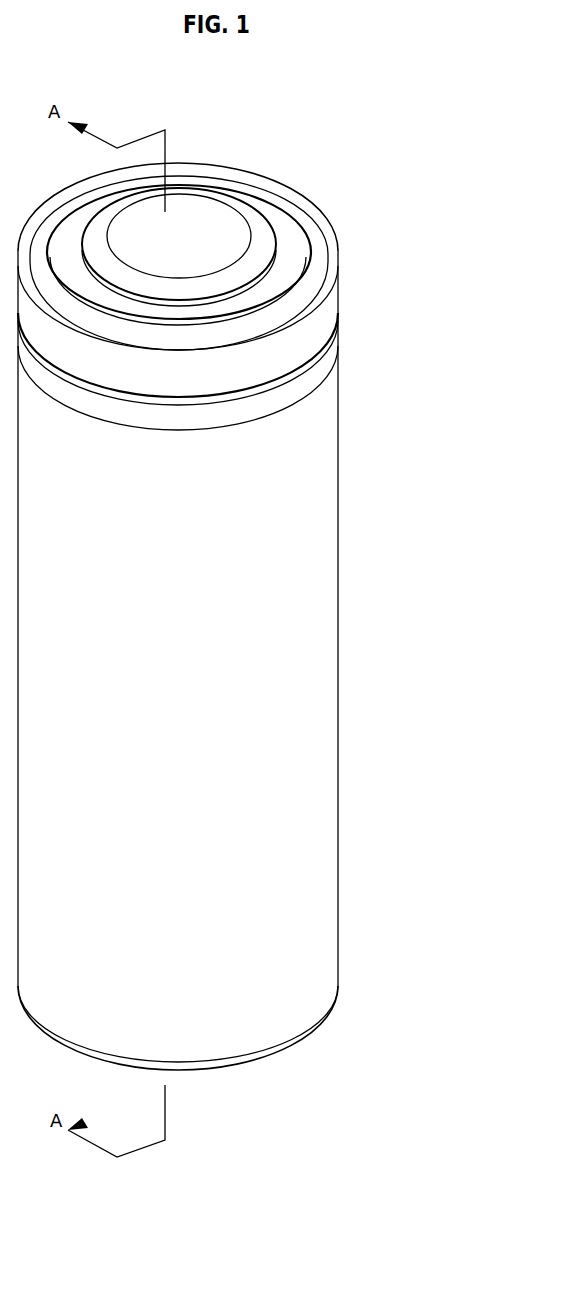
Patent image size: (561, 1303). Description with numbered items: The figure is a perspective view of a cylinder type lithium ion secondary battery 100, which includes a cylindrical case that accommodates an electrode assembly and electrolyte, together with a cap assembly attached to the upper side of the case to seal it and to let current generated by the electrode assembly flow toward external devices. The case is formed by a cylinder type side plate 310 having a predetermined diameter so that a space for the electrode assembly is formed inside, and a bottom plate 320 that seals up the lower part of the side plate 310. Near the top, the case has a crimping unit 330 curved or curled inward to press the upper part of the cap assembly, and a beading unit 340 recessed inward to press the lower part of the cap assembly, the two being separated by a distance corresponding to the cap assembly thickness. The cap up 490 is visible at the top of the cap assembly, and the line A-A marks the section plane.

The cylinder type lithium ion secondary battery 100 is at (402, 282).
The cylinder type side plate 310 is at (300, 745).
The bottom plate 320 is at (288, 1040).
The crimping unit 330 is at (318, 238).
The beading unit 340 is at (303, 383).
The cap up 490 is at (203, 222).